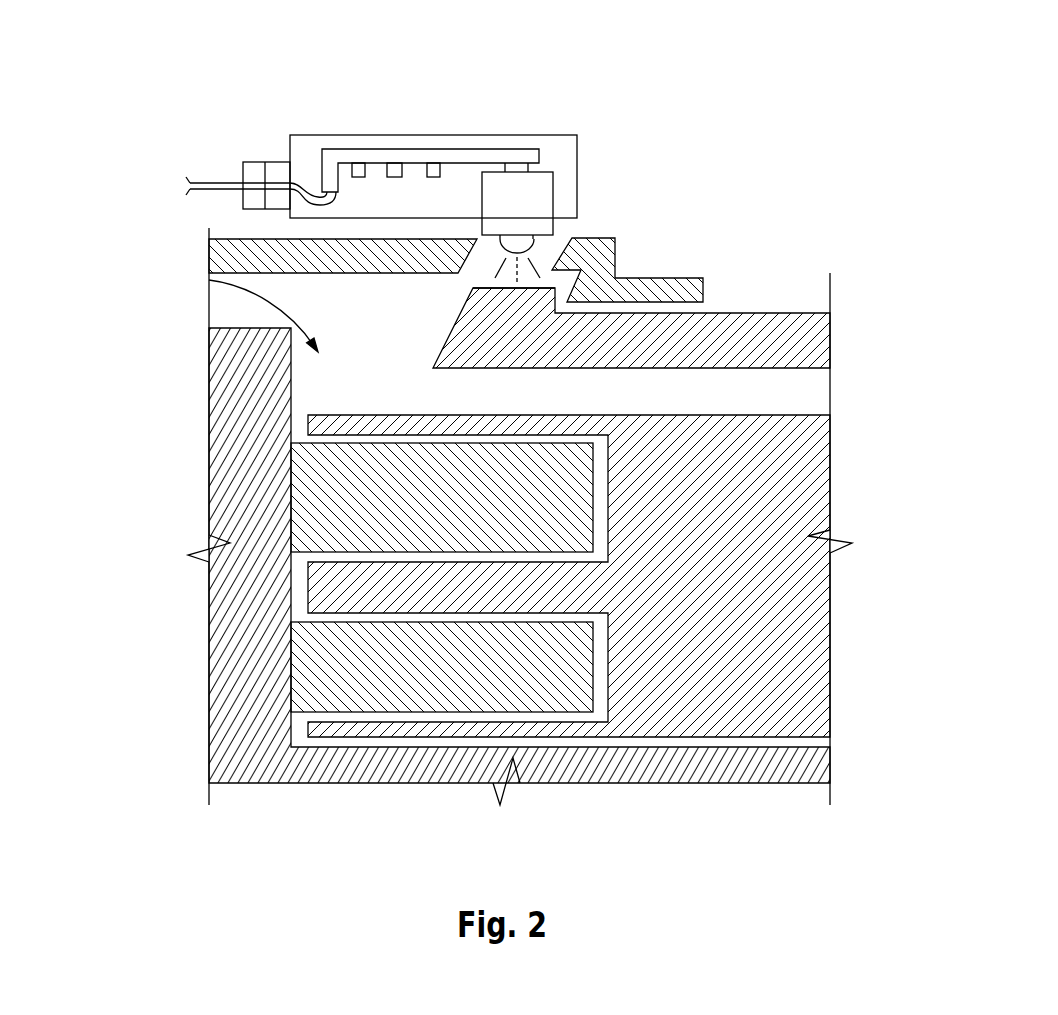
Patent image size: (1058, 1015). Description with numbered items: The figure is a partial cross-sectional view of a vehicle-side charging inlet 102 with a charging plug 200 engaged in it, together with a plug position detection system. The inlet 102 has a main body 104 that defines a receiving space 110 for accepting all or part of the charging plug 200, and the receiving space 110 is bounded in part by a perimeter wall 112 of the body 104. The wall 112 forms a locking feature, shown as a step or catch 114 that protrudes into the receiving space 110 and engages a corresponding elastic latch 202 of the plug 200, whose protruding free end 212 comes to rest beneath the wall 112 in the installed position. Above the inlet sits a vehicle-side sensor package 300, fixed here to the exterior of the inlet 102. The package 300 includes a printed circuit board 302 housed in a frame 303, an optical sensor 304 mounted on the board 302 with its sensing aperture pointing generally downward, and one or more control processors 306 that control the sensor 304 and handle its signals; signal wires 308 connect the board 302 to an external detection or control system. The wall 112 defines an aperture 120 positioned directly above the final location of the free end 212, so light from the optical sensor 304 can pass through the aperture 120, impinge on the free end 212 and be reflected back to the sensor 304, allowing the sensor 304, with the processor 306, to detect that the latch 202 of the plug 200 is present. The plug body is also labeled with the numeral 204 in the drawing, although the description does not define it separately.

The sensor package 300 is at (387, 86).
The printed circuit board 302 is at (487, 155).
The frame 303 is at (350, 210).
The optical sensor 304 is at (538, 193).
The control processor 306 is at (357, 167).
The signal wires 308 is at (215, 182).
The main body 104 is at (519, 555).
The perimeter wall 112 is at (247, 260).
The receiving space 110 is at (209, 278).
The aperture 120 is at (479, 282).
The catch 114 is at (545, 310).
The elastic latch 202 is at (815, 342).
The free end 212 is at (593, 268).
The charging inlet 102 is at (233, 443).
The charging plug 200 is at (807, 480).
The interleaved arms 204 is at (442, 577).